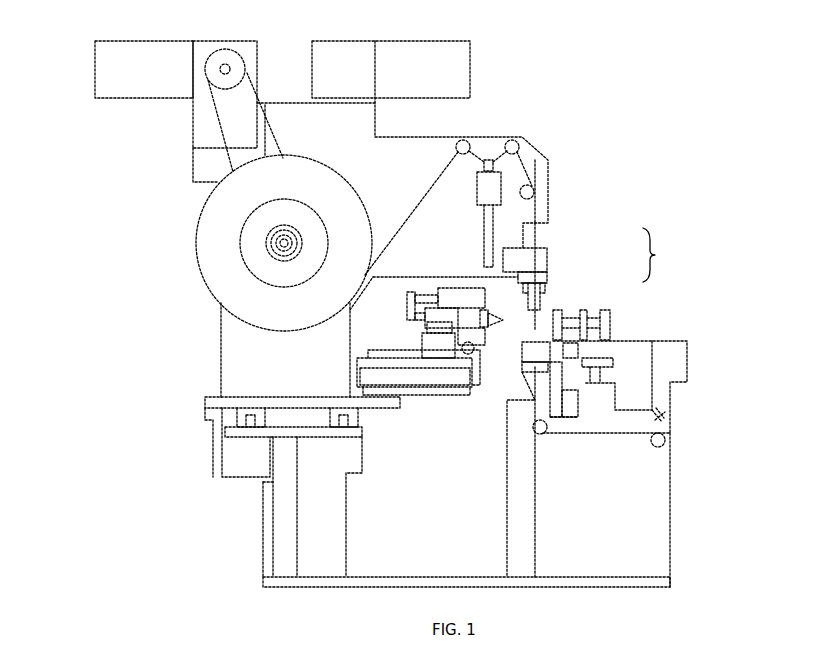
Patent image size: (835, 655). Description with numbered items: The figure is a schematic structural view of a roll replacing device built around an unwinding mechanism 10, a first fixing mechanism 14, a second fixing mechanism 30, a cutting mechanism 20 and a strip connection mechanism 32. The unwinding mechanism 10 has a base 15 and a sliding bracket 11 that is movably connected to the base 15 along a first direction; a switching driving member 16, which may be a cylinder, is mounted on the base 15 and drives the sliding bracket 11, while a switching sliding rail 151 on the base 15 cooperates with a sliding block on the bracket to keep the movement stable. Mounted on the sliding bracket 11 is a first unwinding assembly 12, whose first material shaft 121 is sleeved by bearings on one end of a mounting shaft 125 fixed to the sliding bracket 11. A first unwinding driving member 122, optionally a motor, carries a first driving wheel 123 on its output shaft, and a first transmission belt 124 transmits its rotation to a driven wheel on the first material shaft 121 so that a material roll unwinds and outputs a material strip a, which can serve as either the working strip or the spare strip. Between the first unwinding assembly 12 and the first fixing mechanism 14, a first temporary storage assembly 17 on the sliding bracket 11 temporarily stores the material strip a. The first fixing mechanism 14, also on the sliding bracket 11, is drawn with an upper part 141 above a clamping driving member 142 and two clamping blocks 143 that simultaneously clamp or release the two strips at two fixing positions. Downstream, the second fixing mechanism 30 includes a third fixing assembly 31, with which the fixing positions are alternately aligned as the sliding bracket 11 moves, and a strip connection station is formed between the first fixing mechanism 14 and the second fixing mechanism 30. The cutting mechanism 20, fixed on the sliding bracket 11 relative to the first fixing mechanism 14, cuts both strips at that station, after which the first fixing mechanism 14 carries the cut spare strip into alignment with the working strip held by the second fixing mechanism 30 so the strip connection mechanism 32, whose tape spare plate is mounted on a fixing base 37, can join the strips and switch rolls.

The unwinding mechanism 10 is at (196, 376).
The sliding bracket 11 is at (221, 330).
The first unwinding assembly 12 is at (210, 215).
The first material shaft 121 is at (266, 245).
The first unwinding driving member 122 is at (107, 66).
The first driving wheel 123 is at (217, 64).
The first transmission belt 124 is at (222, 135).
The mounting shaft 125 is at (270, 251).
The first fixing mechanism 14 is at (660, 255).
The guide block 141 is at (538, 262).
The clamping driving member 142 is at (543, 277).
The clamping blocks 143 is at (540, 302).
The base 15 is at (263, 512).
The switching sliding rail 151 is at (238, 428).
The switching driving member 16 is at (234, 457).
The first temporary storage assembly 17 is at (493, 193).
The cutting mechanism 20 is at (432, 378).
The second fixing mechanism 30 is at (695, 391).
The third fixing assembly 31 is at (522, 357).
The strip connection mechanism 32 is at (612, 327).
The fixing base 37 is at (652, 498).
The material strip a is at (537, 237).